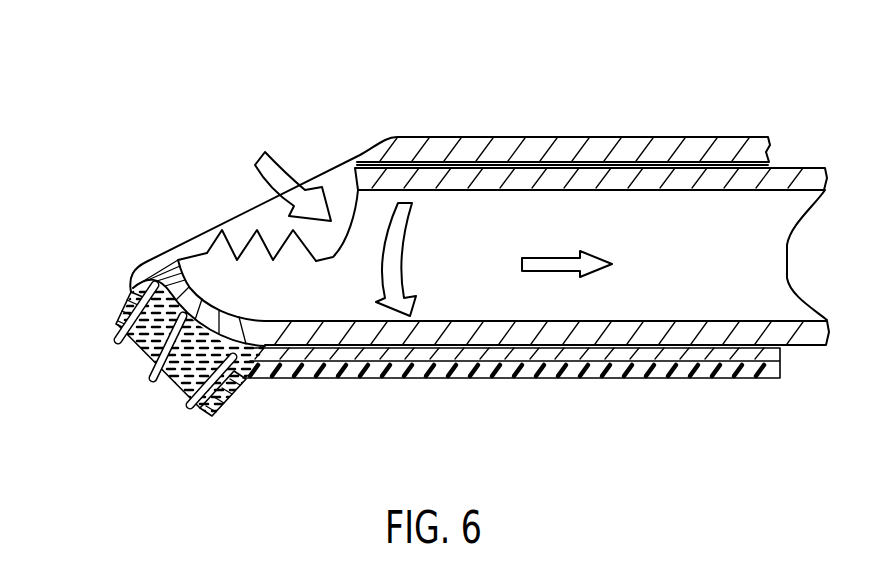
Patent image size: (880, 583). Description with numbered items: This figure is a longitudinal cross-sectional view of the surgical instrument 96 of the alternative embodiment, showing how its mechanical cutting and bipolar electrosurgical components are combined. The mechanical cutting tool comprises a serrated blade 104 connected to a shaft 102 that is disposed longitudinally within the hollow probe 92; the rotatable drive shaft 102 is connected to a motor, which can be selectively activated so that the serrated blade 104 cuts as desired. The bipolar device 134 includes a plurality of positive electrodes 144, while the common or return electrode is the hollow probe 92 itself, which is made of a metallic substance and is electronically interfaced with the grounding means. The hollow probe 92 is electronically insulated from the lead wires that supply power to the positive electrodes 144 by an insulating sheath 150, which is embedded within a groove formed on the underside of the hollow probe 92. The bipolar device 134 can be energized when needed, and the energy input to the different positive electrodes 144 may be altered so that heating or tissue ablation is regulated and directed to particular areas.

The catheter distal tip assembly 96 is at (481, 92).
The hollow probe 92 is at (615, 150).
The shaft 102 is at (782, 178).
The serrated blade 104 is at (220, 248).
The bipolar device 134 is at (182, 447).
The positive electrodes 144 is at (116, 342).
The insulating sheath 150 is at (439, 379).